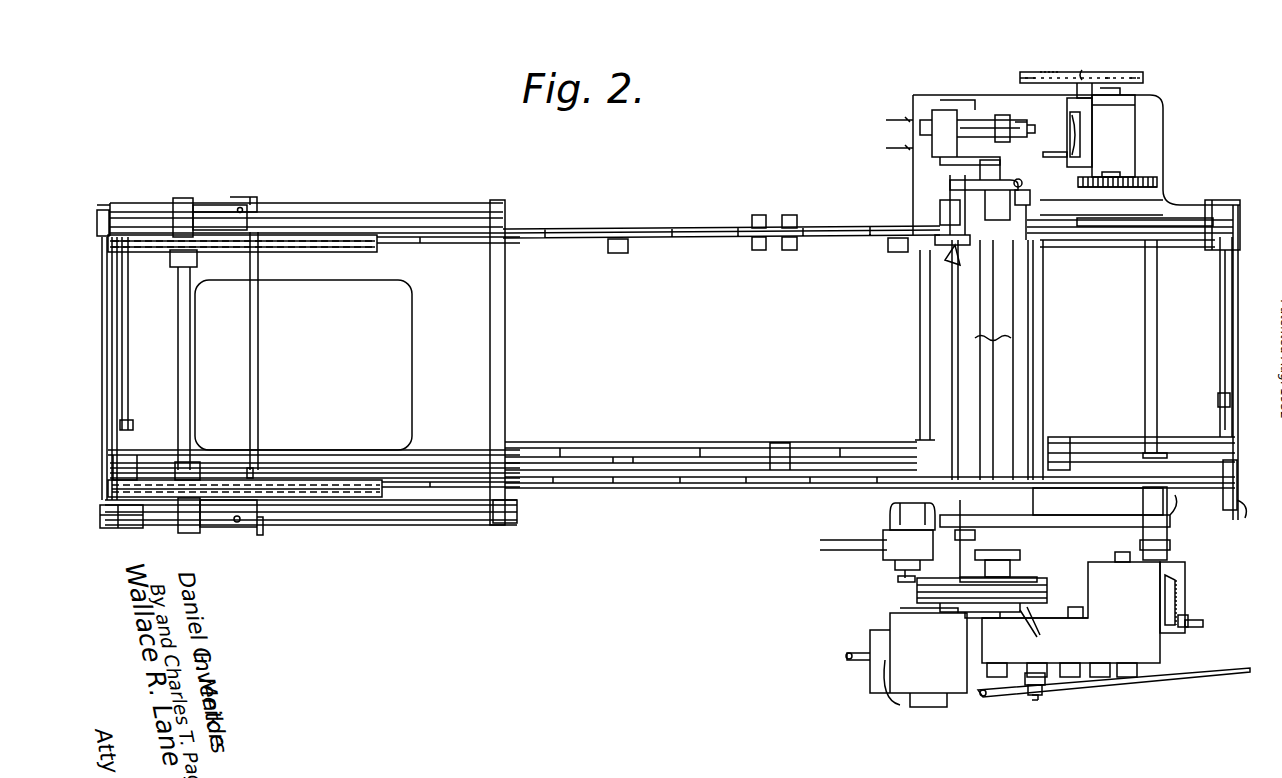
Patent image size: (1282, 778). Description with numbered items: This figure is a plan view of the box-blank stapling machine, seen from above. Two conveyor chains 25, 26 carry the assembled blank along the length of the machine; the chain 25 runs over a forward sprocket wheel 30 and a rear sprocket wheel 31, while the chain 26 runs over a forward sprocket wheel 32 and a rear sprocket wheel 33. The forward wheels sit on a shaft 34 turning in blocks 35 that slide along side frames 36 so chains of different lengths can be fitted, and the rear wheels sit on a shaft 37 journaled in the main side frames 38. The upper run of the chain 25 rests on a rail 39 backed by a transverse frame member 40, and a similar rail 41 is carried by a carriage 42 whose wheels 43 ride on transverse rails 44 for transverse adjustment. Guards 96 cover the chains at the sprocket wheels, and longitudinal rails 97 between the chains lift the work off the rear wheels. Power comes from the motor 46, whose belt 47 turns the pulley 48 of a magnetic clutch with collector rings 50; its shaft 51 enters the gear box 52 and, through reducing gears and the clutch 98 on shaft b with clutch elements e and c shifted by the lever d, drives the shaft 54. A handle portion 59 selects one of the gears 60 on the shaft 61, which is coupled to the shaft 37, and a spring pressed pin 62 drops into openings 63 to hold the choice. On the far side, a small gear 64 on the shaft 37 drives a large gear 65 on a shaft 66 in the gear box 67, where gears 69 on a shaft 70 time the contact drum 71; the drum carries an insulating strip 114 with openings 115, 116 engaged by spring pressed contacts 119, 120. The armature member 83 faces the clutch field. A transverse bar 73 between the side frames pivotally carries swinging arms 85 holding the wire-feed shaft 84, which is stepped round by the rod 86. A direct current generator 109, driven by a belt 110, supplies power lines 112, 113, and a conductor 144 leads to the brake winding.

The conveyor chain 25 is at (698, 232).
The conveyor chain 26 is at (702, 483).
The forward sprocket wheel 30 is at (205, 235).
The rear sprocket wheel 31 is at (1205, 230).
The forward sprocket wheel 32 is at (325, 490).
The rear sprocket wheel 33 is at (1230, 465).
The shaft 34 is at (188, 403).
The block 35 is at (200, 215).
The side frame 36 is at (372, 218).
The shaft 37 is at (1153, 370).
The main side frame 38 is at (1030, 195).
The rail 39 is at (628, 232).
The transverse frame member 40 is at (948, 365).
The rail 41 is at (805, 487).
The carriage 42 is at (670, 448).
The wheel 43 is at (128, 527).
The transverse rail 44 is at (127, 335).
The motor 46 is at (906, 657).
The belt 47 is at (915, 592).
The pulley 48 is at (1040, 590).
The collector ring 50 is at (1044, 629).
The shaft 51 is at (1000, 620).
The gear box 52 is at (1071, 619).
The shaft 54 is at (1120, 558).
The handle portion 59 is at (1190, 618).
The gear 60 is at (1178, 590).
The shaft 61 is at (1170, 562).
The spring pressed pin 62 is at (1198, 627).
The opening 63 is at (1180, 600).
The small gear 64 is at (1160, 182).
The large gear 65 is at (1130, 177).
The shaft 66 is at (1112, 172).
The gear box 67 is at (1130, 112).
The gear 69 is at (1068, 132).
The shaft 70 is at (1077, 90).
The contact drum 71 is at (1125, 72).
The transverse bar 73 is at (1000, 338).
The armature member 83 is at (1015, 575).
The transverse shaft 84 is at (940, 195).
The swinging arm 85 is at (960, 180).
The rod 86 is at (945, 215).
The guard 96 is at (372, 250).
The longitudinal rail 97 is at (1200, 240).
The clutch 98 is at (1050, 685).
The direct current generator 109 is at (859, 580).
The belt 110 is at (898, 580).
The power line 112 is at (843, 540).
The power line 113 is at (890, 548).
The strip of insulating material 114 is at (1020, 72).
The opening 115 is at (1142, 78).
The opening 116 is at (1140, 70).
The spring pressed contact point 119 is at (1070, 72).
The spring pressed contact 120 is at (1078, 70).
The conductor 144 is at (900, 148).
The shaft b is at (1036, 700).
The clutch element c is at (1033, 692).
The lever d is at (1230, 675).
The clutch element e is at (1025, 678).